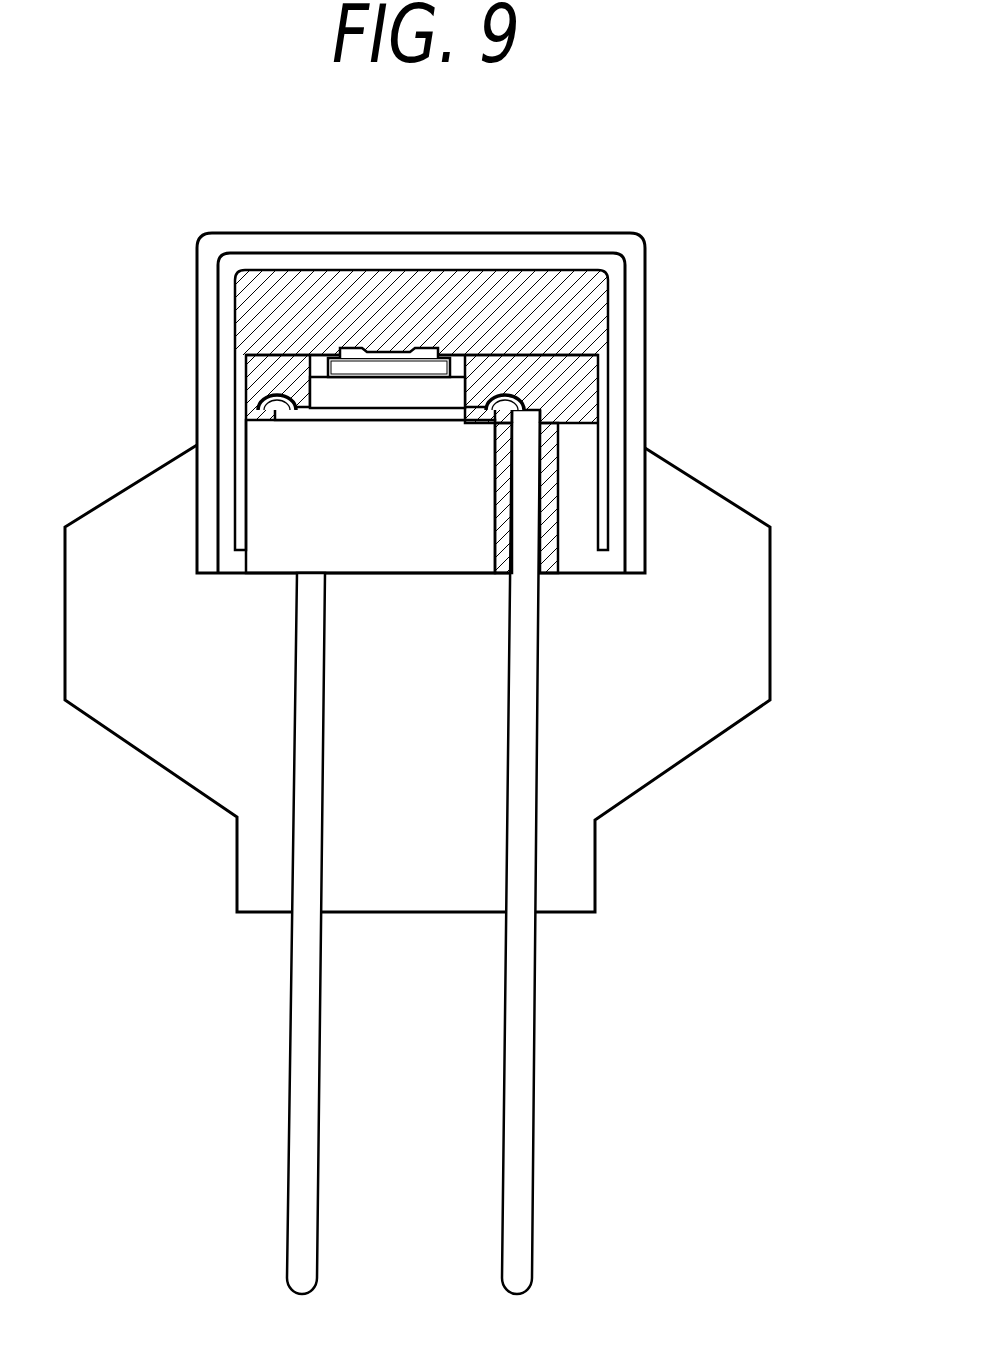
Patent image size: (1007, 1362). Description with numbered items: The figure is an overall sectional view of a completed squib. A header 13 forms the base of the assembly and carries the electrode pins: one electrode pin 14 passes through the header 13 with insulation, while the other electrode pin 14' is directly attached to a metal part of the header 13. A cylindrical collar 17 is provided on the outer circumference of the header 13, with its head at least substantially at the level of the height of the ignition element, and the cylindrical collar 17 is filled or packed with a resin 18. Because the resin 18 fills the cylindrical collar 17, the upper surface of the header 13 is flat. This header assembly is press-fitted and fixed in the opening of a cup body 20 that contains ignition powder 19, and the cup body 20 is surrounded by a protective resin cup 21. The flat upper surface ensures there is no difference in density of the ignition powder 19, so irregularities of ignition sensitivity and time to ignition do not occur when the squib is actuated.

The header 13 is at (293, 475).
The electrode pin 14 is at (591, 852).
The electrode pin 14' is at (216, 933).
The cylindrical collar 17 is at (602, 443).
The resin 18 is at (563, 388).
The ignition powder 19 is at (577, 312).
The cup body 20 is at (467, 258).
The protective resin cup 21 is at (298, 245).